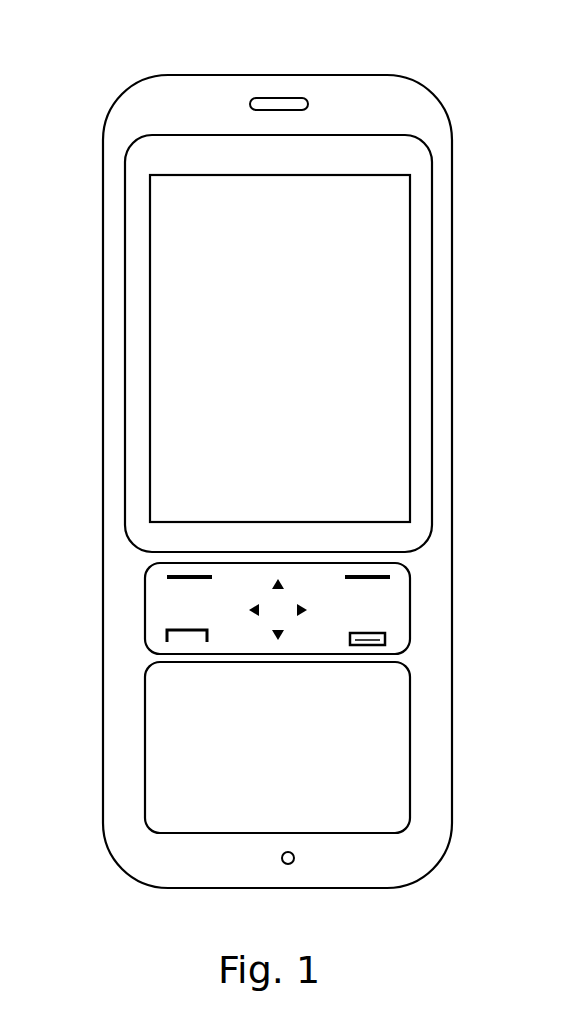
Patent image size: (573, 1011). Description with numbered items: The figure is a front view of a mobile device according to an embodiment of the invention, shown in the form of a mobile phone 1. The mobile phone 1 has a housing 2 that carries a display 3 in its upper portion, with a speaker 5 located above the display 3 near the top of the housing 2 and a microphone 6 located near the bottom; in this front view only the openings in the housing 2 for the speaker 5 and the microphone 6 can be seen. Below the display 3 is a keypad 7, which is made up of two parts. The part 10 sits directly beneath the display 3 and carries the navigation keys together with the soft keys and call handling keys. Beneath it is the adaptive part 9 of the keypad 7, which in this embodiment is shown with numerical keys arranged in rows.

The mobile phone 1 is at (450, 76).
The housing 2 is at (452, 184).
The display 3 is at (390, 343).
The speaker 5 is at (279, 101).
The microphone 6 is at (295, 858).
The keypad 7 is at (116, 688).
The adaptive part 9 is at (397, 742).
The part with navigation keys and soft keys and call handling keys 10 is at (397, 605).